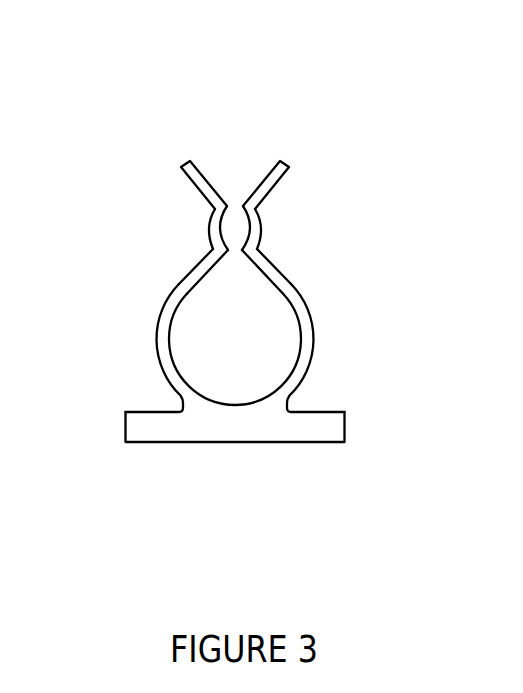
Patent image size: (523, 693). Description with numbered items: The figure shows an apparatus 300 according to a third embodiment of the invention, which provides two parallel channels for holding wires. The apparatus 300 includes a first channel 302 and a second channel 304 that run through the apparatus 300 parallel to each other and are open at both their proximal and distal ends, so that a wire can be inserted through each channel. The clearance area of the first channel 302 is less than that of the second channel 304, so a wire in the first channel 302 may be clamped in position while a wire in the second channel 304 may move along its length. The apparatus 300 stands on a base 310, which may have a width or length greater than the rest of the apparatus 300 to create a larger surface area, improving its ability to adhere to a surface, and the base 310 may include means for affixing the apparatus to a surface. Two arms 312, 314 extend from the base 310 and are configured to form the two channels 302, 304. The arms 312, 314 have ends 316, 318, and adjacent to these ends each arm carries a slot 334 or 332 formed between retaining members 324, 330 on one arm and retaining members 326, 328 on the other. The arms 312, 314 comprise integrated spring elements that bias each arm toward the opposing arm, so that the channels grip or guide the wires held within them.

The apparatus 300 is at (243, 277).
The first channel 302 is at (149, 244).
The second channel 304 is at (158, 349).
The base 310 is at (235, 464).
The arm 312 is at (104, 357).
The arm 314 is at (360, 348).
The end 316 is at (197, 147).
The end 318 is at (277, 147).
The retaining member 324 is at (120, 198).
The retaining member 326 is at (338, 206).
The retaining member 328 is at (347, 273).
The retaining member 330 is at (109, 286).
The slot 332 is at (337, 228).
The slot 334 is at (119, 240).